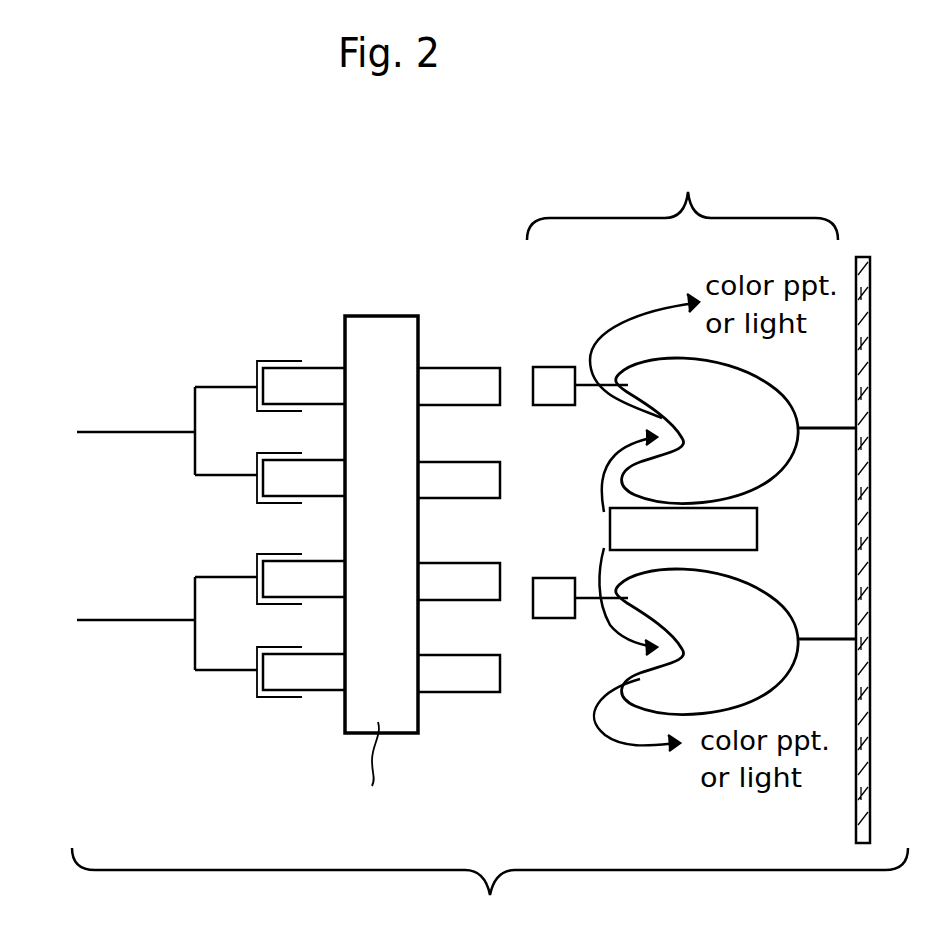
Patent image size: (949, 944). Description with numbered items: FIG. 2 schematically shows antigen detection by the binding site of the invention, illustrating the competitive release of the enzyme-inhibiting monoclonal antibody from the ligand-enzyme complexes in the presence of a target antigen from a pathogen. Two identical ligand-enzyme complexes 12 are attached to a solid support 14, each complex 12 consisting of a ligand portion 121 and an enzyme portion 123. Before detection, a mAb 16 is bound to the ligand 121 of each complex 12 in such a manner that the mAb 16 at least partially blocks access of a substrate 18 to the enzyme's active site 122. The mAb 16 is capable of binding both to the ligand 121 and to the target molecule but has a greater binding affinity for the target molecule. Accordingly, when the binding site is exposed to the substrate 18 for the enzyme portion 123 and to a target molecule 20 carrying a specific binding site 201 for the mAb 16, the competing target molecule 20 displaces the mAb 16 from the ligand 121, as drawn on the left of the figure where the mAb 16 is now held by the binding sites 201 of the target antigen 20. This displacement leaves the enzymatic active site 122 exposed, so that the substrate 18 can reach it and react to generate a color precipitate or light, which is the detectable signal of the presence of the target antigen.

The ligand-enzyme complex 12 is at (682, 193).
The solid support 14 is at (868, 344).
The monoclonal antibody 16 is at (147, 432).
The substrate 18 is at (608, 527).
The target molecule 20 is at (385, 338).
The ligand portion 121 is at (552, 378).
The enzyme active site 122 is at (617, 652).
The enzyme portion 123 is at (765, 455).
The specific binding site 201 is at (283, 480).